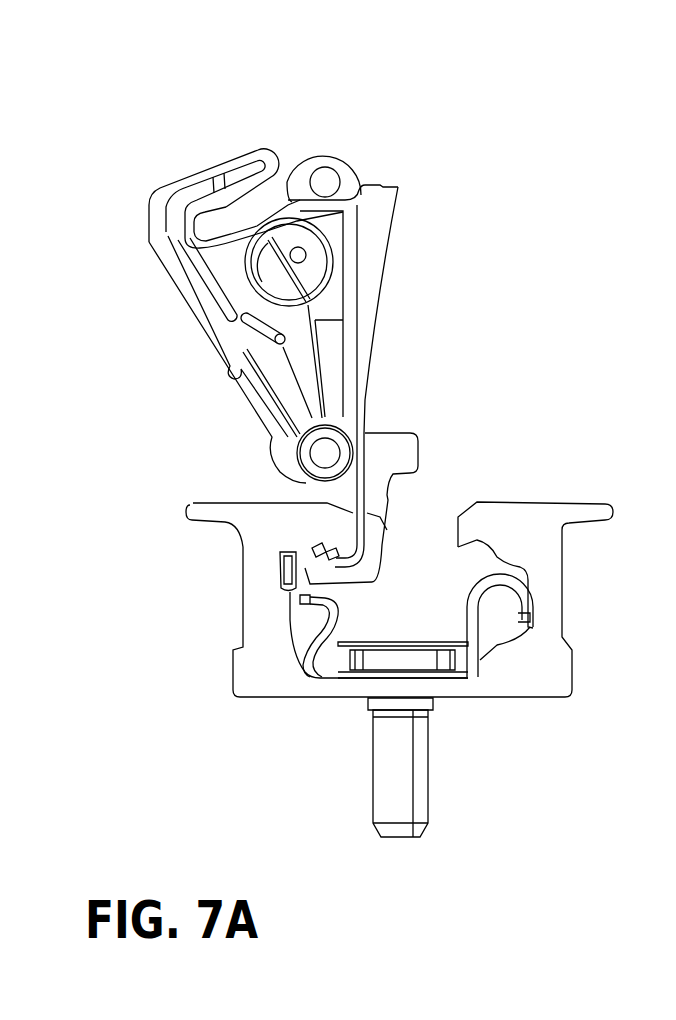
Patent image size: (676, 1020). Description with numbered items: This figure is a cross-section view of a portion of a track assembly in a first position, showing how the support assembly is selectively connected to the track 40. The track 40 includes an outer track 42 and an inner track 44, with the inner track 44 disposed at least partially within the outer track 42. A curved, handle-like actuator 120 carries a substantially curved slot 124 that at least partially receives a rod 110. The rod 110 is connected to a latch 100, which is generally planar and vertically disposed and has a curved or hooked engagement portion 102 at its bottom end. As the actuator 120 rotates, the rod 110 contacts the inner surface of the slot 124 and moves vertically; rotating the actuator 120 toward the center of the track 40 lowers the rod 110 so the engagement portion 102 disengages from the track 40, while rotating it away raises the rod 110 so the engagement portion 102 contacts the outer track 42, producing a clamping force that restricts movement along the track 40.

The actuator 120 is at (152, 196).
The slot 124 is at (240, 200).
The rod 110 is at (336, 172).
The latch 100 is at (366, 527).
The engagement portion 102 is at (306, 546).
The track 40 is at (224, 628).
The outer track 42 is at (527, 507).
The inner track 44 is at (485, 672).